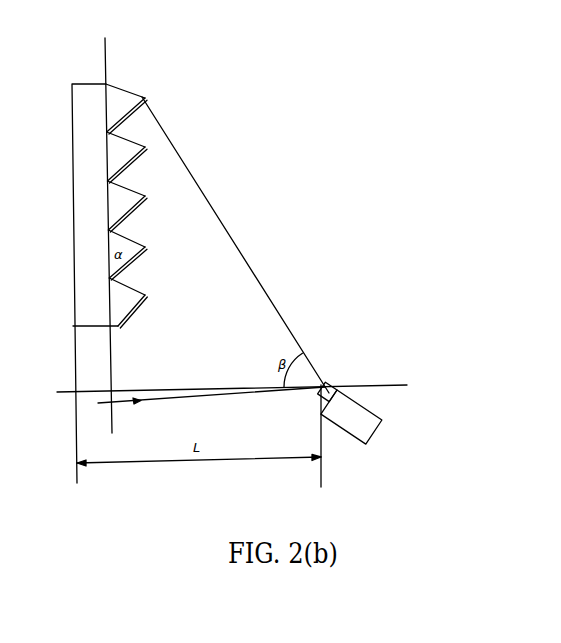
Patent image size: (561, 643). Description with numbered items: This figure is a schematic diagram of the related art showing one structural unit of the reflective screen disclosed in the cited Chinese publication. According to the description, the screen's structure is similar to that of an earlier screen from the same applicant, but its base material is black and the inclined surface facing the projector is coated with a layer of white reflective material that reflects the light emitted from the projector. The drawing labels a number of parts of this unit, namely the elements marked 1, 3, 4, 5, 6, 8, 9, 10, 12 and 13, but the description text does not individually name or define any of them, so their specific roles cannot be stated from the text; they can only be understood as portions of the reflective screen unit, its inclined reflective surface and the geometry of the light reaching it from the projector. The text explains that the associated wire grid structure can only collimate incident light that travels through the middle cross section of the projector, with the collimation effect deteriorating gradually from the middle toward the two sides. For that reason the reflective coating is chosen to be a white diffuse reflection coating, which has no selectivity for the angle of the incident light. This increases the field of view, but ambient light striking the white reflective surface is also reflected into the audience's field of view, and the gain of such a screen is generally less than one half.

The camera 1 is at (381, 419).
The bottom end portion 3 is at (128, 320).
The sawtooth structure 4 is at (110, 230).
The housing wall 5 is at (77, 137).
The reflecting surfaces 6 is at (147, 298).
The optical axis 8 is at (130, 402).
The light ray 9 is at (263, 287).
The central axis 10 is at (103, 48).
The reference line 12 is at (368, 383).
The direction 13 is at (70, 284).